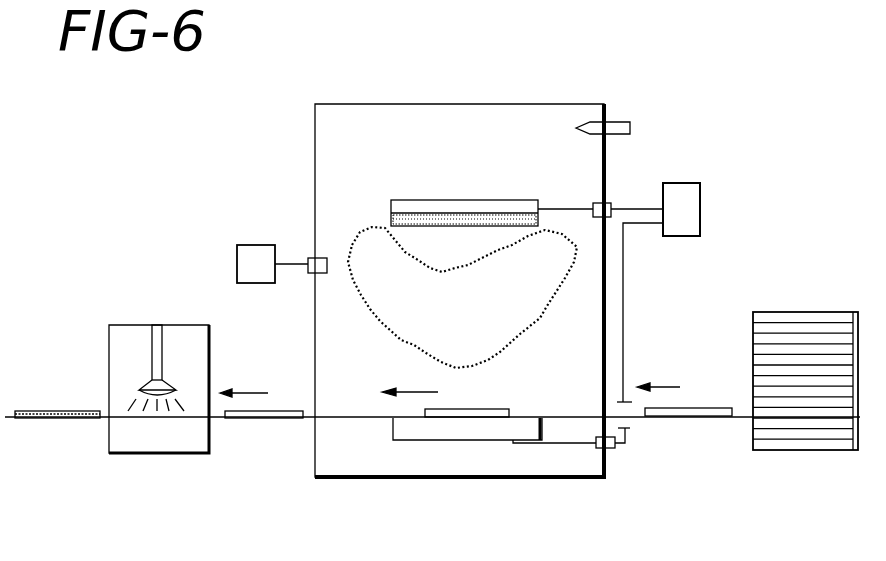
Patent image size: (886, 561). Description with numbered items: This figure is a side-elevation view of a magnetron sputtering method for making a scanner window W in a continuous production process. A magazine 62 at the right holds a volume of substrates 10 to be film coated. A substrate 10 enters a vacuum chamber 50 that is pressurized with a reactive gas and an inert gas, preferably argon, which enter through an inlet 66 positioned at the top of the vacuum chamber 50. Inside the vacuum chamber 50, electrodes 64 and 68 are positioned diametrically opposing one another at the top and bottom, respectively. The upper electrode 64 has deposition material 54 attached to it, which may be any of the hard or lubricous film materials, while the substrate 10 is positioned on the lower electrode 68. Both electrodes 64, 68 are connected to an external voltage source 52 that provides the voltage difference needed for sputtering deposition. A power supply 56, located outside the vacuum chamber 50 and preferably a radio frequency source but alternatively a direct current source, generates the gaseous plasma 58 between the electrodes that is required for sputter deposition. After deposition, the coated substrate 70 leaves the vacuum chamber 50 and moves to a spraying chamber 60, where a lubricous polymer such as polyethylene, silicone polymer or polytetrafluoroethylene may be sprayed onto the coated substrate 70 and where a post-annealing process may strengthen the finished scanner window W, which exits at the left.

The substrate 10 is at (693, 408).
The vacuum chamber 50 is at (470, 104).
The external voltage source 52 is at (690, 205).
The deposition material 54 is at (436, 218).
The power supply 56 is at (258, 245).
The gaseous plasma 58 is at (514, 317).
The spraying chamber 60 is at (148, 325).
The magazine 62 is at (806, 312).
The electrode 64 is at (470, 208).
The inlet 66 is at (637, 126).
The electrode 68 is at (446, 432).
The coated substrate 70 is at (280, 411).
The scanner window W is at (48, 411).